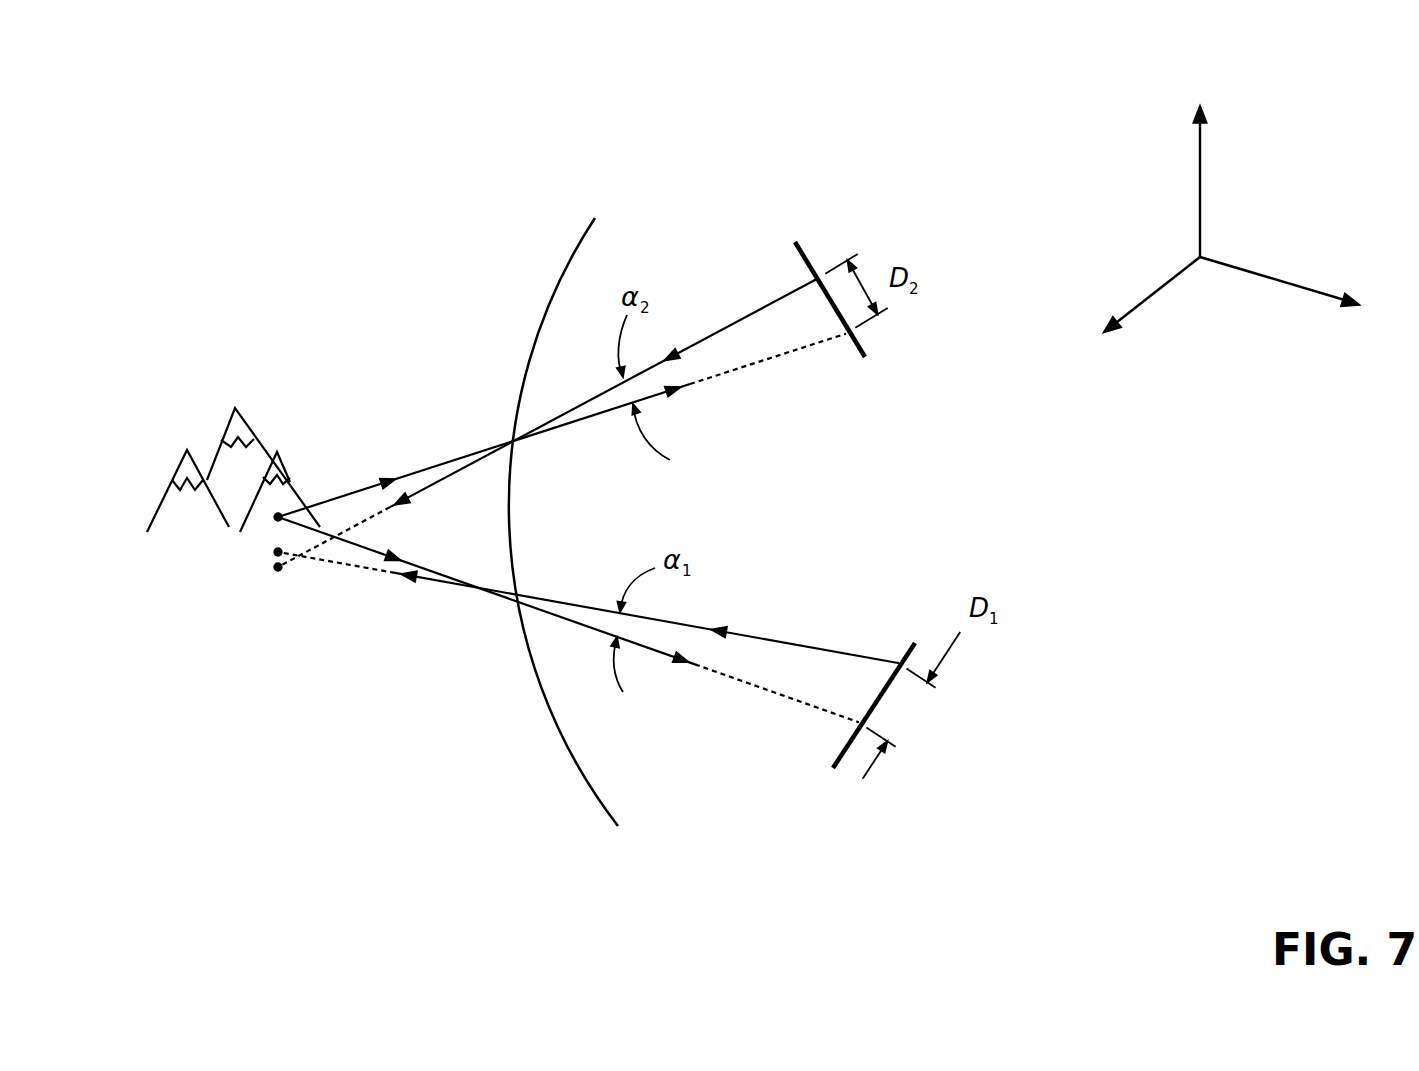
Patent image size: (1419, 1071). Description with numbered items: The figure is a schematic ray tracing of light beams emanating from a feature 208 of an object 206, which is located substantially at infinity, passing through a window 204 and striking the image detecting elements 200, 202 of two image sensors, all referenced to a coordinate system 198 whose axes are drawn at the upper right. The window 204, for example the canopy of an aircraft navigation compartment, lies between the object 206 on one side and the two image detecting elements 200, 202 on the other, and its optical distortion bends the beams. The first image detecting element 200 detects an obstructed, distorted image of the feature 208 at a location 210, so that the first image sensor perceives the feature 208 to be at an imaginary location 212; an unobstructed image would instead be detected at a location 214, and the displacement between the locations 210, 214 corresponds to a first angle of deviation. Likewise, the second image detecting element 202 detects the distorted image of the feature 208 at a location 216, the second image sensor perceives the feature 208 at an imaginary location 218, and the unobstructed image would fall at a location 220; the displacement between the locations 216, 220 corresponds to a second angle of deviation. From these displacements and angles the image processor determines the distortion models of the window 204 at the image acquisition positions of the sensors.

The coordinate system 198 is at (1276, 152).
The image detecting element 200 is at (833, 770).
The image detecting element 202 is at (795, 240).
The window 204 is at (575, 240).
The object 206 is at (231, 349).
The feature 208 is at (280, 514).
The location 210 is at (898, 660).
The imaginary location 212 is at (276, 552).
The location 214 is at (857, 723).
The location 216 is at (815, 280).
The imaginary location 218 is at (278, 569).
The location 220 is at (847, 338).